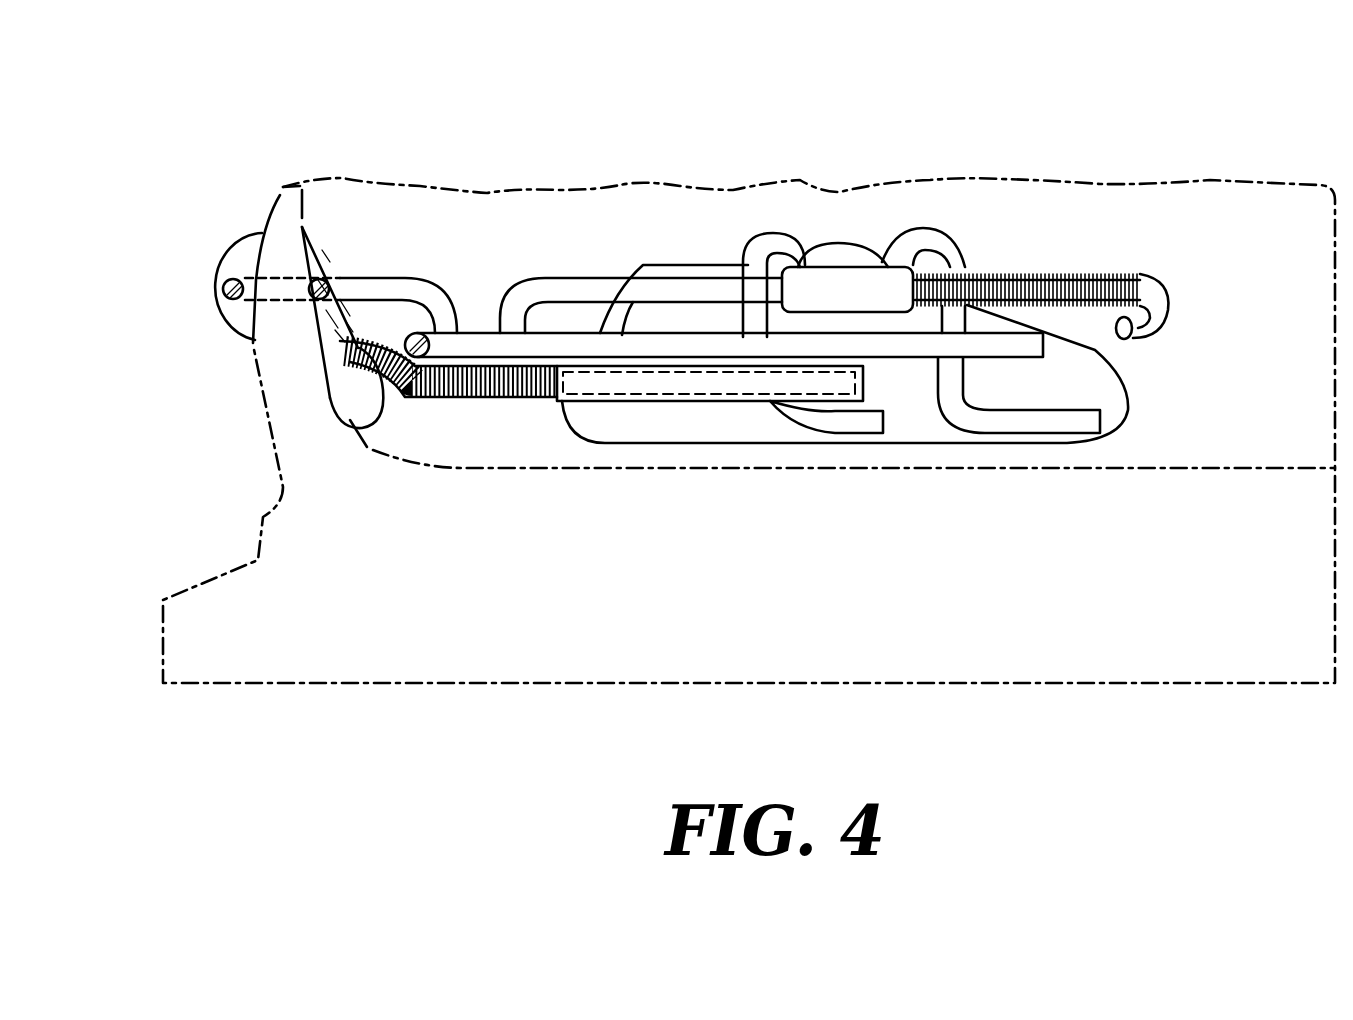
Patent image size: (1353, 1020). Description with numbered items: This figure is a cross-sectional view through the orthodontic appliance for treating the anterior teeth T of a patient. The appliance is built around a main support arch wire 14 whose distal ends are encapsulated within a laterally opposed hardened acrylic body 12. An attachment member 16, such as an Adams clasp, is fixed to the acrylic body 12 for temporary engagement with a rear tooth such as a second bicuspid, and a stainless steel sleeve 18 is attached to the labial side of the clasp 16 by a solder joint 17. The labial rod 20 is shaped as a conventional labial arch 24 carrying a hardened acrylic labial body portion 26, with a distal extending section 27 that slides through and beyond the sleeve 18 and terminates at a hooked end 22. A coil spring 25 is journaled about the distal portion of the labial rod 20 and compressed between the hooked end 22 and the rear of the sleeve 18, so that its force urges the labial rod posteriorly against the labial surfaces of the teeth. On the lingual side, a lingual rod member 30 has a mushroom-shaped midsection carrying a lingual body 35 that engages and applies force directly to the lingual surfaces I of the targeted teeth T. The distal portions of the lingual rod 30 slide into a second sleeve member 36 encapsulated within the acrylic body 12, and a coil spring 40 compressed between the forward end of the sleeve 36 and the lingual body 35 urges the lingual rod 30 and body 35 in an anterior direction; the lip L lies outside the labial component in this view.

The hardened acrylic body 12 is at (1113, 400).
The main support arch wire 14 is at (488, 340).
The attachment member 16 is at (966, 208).
The solder joint 17 is at (866, 225).
The stainless steel sleeve 18 is at (826, 255).
The labial rod 20 is at (391, 250).
The hooked end 22 is at (1163, 313).
The labial arch 24 is at (220, 292).
The coil spring 25 is at (1078, 272).
The labial body portion 26 is at (227, 263).
The distal extending section 27 is at (608, 290).
The lingual rod member 30 is at (647, 383).
The lingual body 35 is at (323, 370).
The sleeve member 36 is at (310, 312).
The coil spring 40 is at (499, 429).
The anterior teeth T is at (262, 182).
The lingual surfaces I is at (303, 212).
The lip L is at (269, 222).